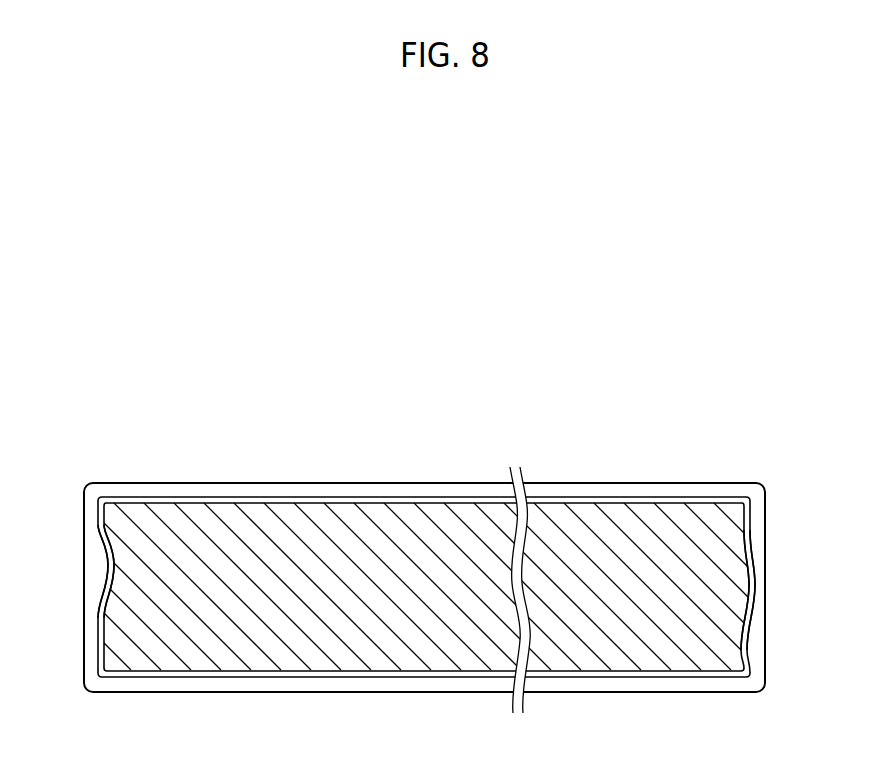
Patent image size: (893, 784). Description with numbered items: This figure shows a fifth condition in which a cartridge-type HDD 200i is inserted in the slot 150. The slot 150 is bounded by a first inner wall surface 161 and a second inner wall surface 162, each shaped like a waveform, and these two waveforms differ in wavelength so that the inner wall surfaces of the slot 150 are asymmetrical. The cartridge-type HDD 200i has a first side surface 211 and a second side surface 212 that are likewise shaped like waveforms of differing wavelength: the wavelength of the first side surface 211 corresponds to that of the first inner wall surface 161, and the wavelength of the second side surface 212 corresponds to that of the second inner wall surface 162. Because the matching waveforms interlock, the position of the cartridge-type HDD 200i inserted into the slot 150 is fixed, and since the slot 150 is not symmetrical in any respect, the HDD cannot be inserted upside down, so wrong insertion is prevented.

The slot 150 is at (392, 459).
The first inner wall surface 161 is at (100, 529).
The second inner wall surface 162 is at (749, 521).
The first side surface 211 is at (112, 545).
The second side surface 212 is at (740, 543).
The cartridge-type HDD 200i is at (362, 645).